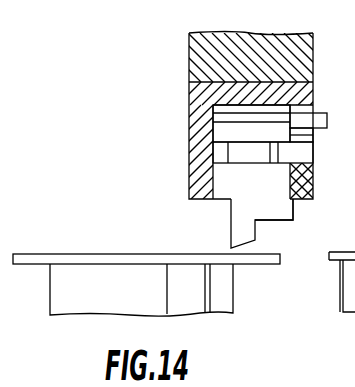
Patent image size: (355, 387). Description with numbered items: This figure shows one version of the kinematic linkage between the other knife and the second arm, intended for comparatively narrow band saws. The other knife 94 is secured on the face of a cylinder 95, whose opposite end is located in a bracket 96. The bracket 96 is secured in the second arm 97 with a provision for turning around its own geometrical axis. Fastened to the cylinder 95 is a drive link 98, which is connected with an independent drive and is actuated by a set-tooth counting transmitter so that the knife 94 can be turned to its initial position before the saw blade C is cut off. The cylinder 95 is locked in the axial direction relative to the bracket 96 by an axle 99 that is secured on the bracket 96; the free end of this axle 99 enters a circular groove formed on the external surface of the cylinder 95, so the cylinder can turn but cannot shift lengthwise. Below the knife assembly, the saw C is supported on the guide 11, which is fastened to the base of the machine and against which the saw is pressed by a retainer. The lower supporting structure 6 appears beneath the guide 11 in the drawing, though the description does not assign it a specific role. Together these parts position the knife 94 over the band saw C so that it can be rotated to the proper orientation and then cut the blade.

The second arm 97 is at (205, 60).
The bracket 96 is at (213, 90).
The drive link 98 is at (314, 118).
The axle 99 is at (305, 152).
The cylinder 95 is at (277, 205).
The other knife 94 is at (280, 225).
The guide 11 is at (146, 244).
The saw C is at (134, 253).
The support block 6 is at (220, 285).